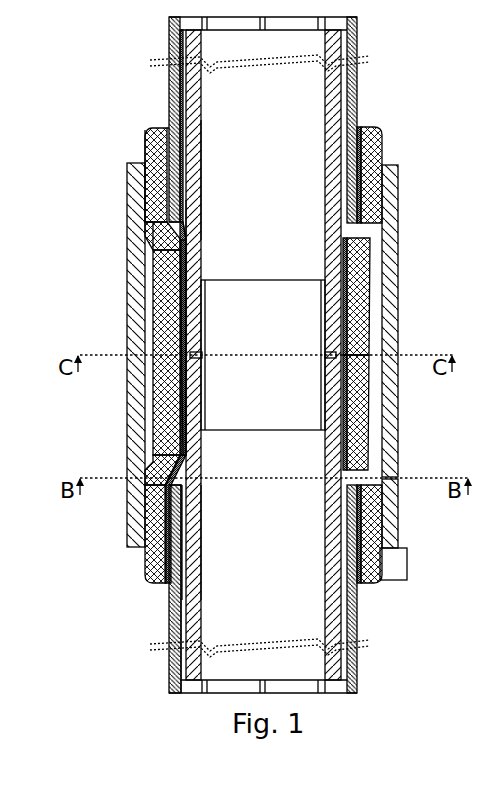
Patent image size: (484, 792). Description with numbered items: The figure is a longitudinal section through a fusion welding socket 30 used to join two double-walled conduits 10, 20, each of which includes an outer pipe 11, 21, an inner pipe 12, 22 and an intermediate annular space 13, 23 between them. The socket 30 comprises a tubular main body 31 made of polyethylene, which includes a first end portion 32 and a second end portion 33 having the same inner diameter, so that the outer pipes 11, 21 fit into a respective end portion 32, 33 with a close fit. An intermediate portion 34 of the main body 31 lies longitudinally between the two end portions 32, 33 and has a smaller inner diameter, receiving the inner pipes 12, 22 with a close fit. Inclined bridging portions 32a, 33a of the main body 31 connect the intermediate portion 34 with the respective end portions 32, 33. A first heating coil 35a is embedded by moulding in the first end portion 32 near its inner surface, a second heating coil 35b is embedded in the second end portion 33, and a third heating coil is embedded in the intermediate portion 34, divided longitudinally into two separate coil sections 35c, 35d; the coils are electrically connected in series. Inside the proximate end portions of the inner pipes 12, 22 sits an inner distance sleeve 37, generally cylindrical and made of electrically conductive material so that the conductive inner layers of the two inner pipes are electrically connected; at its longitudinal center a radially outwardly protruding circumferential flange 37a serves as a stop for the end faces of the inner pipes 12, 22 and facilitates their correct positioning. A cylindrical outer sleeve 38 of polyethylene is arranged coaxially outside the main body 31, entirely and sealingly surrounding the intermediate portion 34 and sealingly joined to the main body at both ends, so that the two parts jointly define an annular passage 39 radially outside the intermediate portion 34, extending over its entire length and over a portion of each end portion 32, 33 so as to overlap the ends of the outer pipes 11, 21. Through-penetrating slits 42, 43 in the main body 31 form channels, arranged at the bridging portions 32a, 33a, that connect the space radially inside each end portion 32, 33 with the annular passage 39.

The double-walled conduit 10 is at (168, 615).
The outer pipe 11 is at (180, 578).
The inner pipe 12 is at (201, 505).
The intermediate annular space 13 is at (184, 553).
The double-walled conduit 20 is at (170, 96).
The outer pipe 21 is at (191, 146).
The inner pipe 22 is at (201, 222).
The intermediate annular space 23 is at (201, 170).
The fusion welding socket 30 is at (128, 317).
The tubular main body 31 is at (147, 129).
The first end portion 32 is at (150, 565).
The bridging portion 32a is at (158, 472).
The second end portion 33 is at (146, 150).
The bridging portion 33a is at (145, 240).
The intermediate portion 34 is at (147, 352).
The first heating coil 35a is at (372, 526).
The second heating coil 35b is at (375, 186).
The third heating coil section 35c is at (362, 400).
The third heating coil section 35d is at (362, 300).
The inner distance sleeve 37 is at (205, 312).
The circumferential flange 37a is at (325, 353).
The outer sleeve 38 is at (150, 430).
The annular passage 39 is at (150, 300).
The slit 42 is at (370, 236).
The slit 43 is at (388, 480).